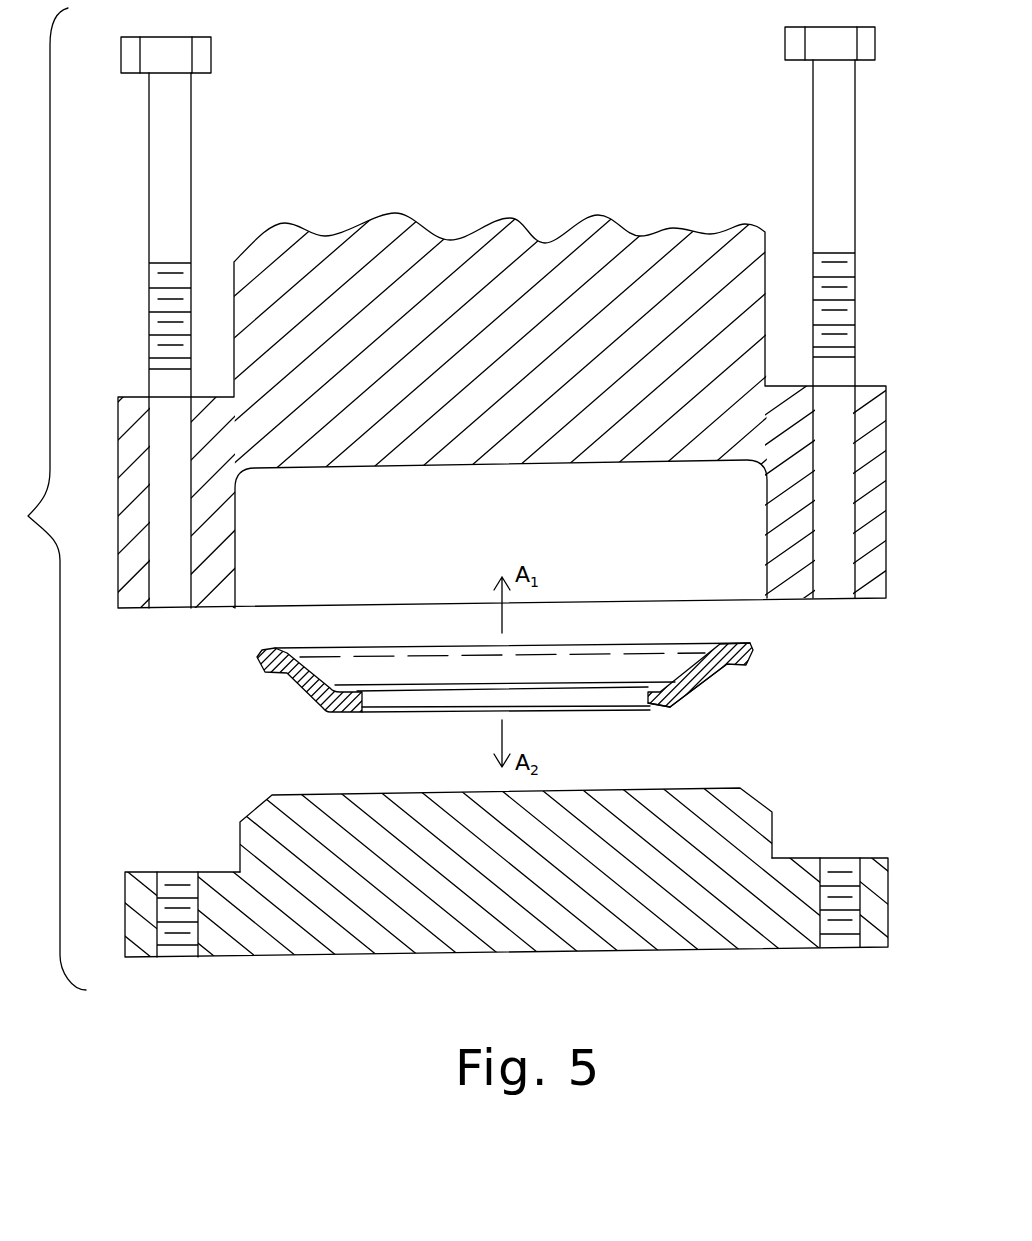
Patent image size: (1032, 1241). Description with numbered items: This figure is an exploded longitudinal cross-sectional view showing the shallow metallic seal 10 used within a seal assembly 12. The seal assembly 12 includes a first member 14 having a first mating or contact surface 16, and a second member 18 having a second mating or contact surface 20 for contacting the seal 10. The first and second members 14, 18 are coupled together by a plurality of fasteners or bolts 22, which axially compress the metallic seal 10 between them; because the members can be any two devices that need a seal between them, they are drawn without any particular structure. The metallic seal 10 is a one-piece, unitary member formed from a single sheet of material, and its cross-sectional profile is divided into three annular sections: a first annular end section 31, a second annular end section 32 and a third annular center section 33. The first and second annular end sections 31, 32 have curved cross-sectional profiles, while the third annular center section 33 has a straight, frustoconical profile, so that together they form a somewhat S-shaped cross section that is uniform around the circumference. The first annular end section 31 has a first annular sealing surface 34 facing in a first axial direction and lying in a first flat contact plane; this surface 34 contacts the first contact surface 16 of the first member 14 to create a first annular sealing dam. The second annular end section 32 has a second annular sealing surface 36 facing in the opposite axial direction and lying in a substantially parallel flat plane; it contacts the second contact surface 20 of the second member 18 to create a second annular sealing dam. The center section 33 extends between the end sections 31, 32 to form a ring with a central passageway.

The metallic seal 10 is at (504, 681).
The seal assembly 12 is at (578, 107).
The first member 14 is at (452, 228).
The first contact surface 16 is at (548, 468).
The second member 18 is at (311, 967).
The second contact surface 20 is at (315, 795).
The fasteners or bolts 22 is at (190, 138).
The first annular end section 31 is at (740, 643).
The second annular end section 32 is at (670, 712).
The third annular center section 33 is at (702, 688).
The first annular sealing surface 34 is at (333, 649).
The second annular sealing surface 36 is at (522, 712).